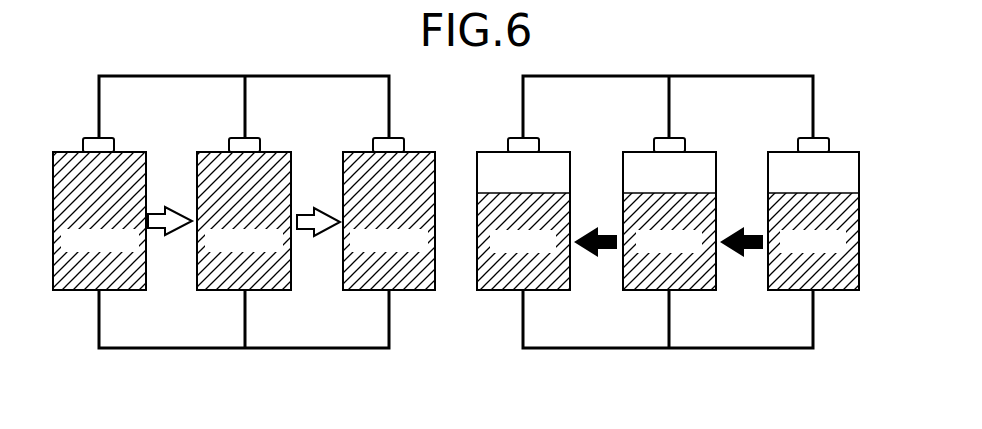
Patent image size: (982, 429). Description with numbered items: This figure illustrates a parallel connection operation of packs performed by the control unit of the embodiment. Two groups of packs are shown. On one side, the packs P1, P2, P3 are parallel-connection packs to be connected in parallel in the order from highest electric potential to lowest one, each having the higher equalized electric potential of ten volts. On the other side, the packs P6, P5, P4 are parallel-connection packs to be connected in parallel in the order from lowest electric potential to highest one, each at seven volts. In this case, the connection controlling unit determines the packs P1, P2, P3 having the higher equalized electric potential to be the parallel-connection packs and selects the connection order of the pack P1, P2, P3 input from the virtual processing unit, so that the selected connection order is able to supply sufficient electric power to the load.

The pack P1 is at (127, 152).
The pack P2 is at (273, 152).
The pack P3 is at (418, 152).
The pack P4 is at (552, 152).
The pack P5 is at (697, 152).
The pack P6 is at (841, 152).